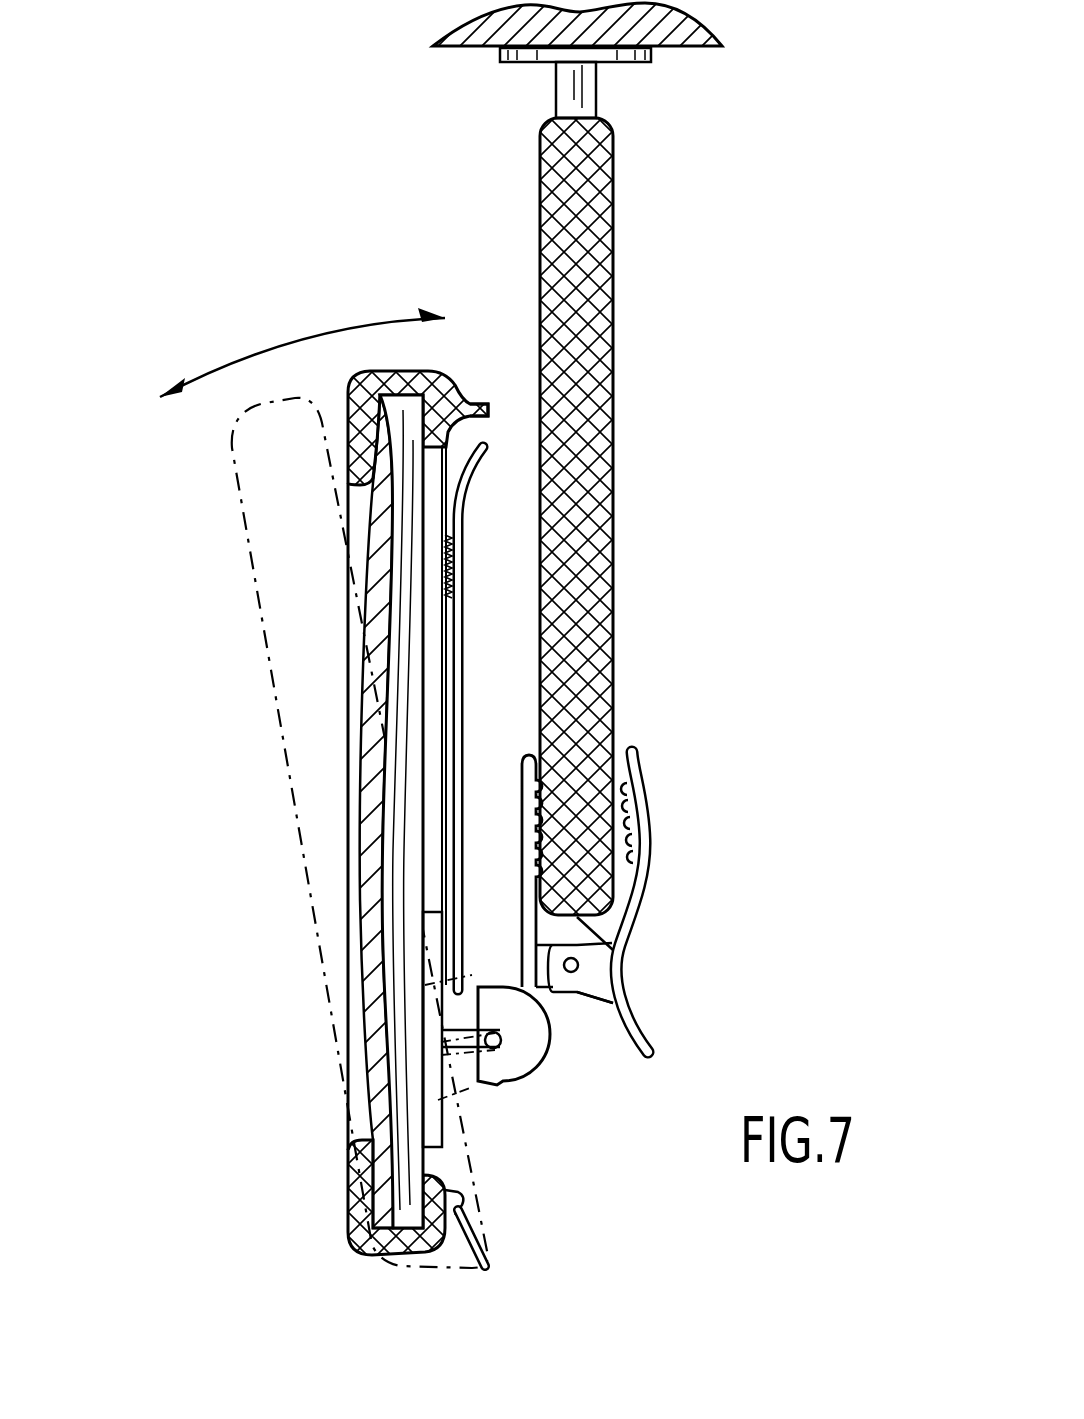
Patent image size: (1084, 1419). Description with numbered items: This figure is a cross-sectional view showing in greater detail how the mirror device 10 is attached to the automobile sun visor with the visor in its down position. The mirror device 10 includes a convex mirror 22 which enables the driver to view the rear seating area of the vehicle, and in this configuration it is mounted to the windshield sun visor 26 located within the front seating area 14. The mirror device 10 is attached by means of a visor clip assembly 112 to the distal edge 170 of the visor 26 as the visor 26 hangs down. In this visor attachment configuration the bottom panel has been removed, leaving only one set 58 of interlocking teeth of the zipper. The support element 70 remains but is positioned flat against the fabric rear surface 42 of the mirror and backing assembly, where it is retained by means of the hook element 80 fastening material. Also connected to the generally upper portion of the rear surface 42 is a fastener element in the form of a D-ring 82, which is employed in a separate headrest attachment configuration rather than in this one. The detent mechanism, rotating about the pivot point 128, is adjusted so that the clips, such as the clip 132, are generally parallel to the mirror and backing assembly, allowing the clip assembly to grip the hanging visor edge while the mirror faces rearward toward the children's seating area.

The mirror device 10 is at (228, 954).
The front seating area 14 is at (130, 252).
The convex mirror 22 is at (358, 745).
The windshield sun visor 26 is at (578, 157).
The rear surface 42 is at (447, 602).
The set of interlocking teeth 58 is at (490, 408).
The support element 70 is at (460, 643).
The hook element fastening material 80 is at (447, 565).
The D-ring 82 is at (485, 1270).
The visor clip assembly 112 is at (552, 1160).
The pivot point 128 is at (518, 1085).
The clip 132 is at (765, 833).
The distal edge 170 is at (615, 950).